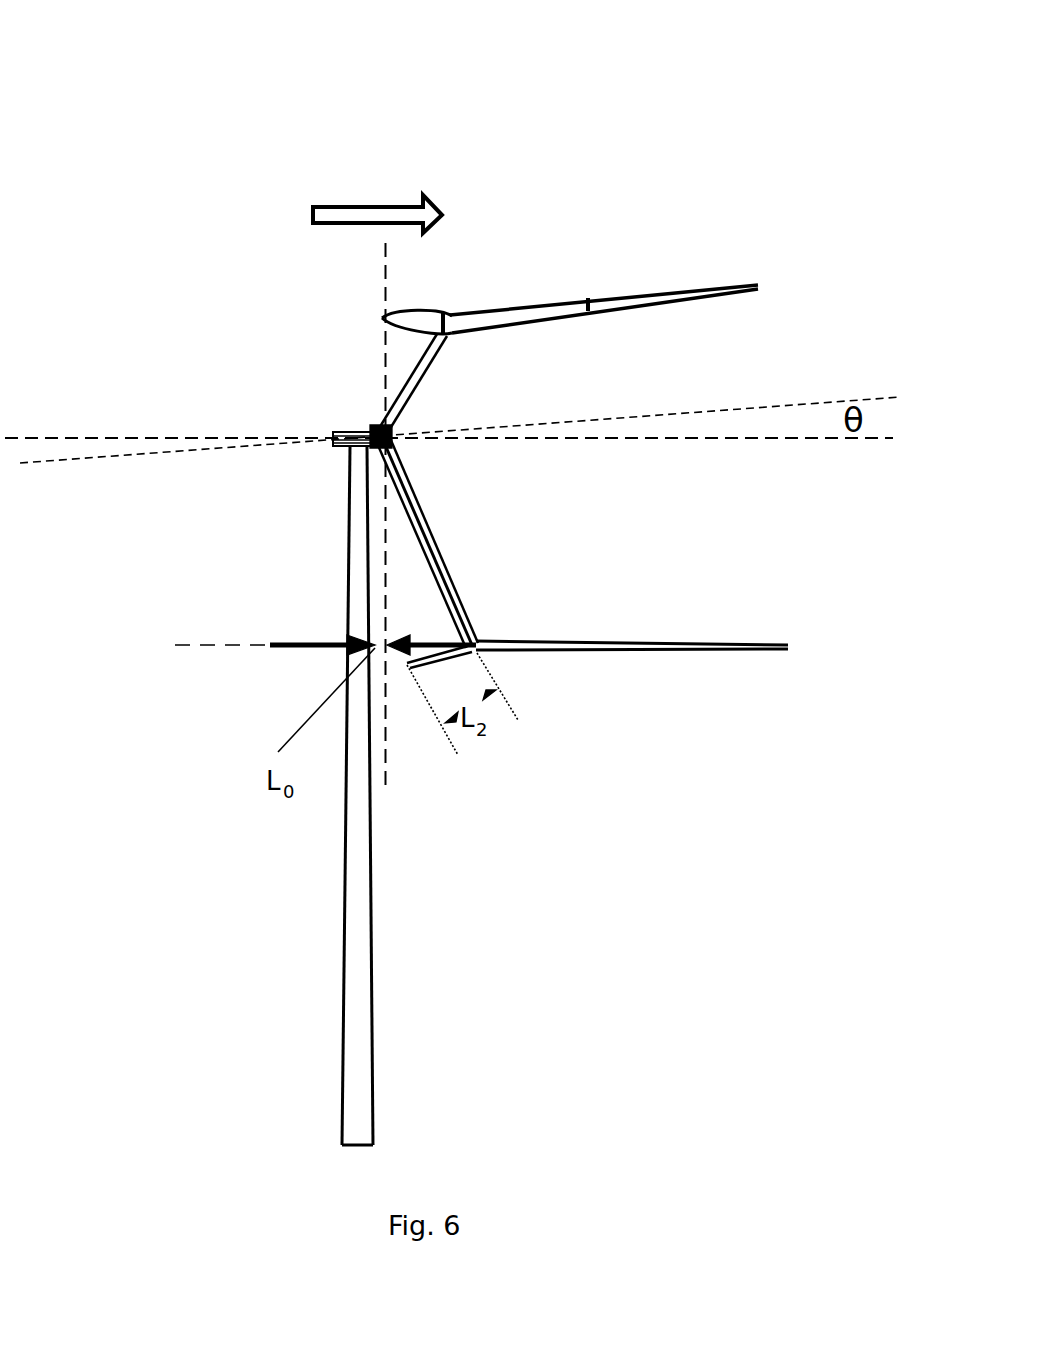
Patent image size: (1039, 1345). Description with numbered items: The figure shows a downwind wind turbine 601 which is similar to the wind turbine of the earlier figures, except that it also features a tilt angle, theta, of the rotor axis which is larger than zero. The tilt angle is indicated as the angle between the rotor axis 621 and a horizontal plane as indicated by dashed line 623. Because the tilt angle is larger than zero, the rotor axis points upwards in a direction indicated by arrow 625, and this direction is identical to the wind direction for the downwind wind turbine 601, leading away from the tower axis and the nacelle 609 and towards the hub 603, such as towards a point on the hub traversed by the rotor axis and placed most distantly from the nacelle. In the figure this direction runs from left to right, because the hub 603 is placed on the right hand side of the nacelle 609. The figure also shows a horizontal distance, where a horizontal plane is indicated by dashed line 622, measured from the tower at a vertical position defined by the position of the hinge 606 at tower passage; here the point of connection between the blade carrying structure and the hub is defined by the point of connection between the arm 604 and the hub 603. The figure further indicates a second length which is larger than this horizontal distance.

The downwind wind turbine 601 is at (243, 115).
The arrow 625 is at (358, 213).
The dashed line 623 is at (190, 438).
The rotor axis 621 is at (130, 463).
The nacelle 609 is at (333, 440).
The hub 603 is at (403, 437).
The arm 604 is at (435, 555).
The hinge 606 is at (472, 645).
The dashed line 622 is at (240, 642).